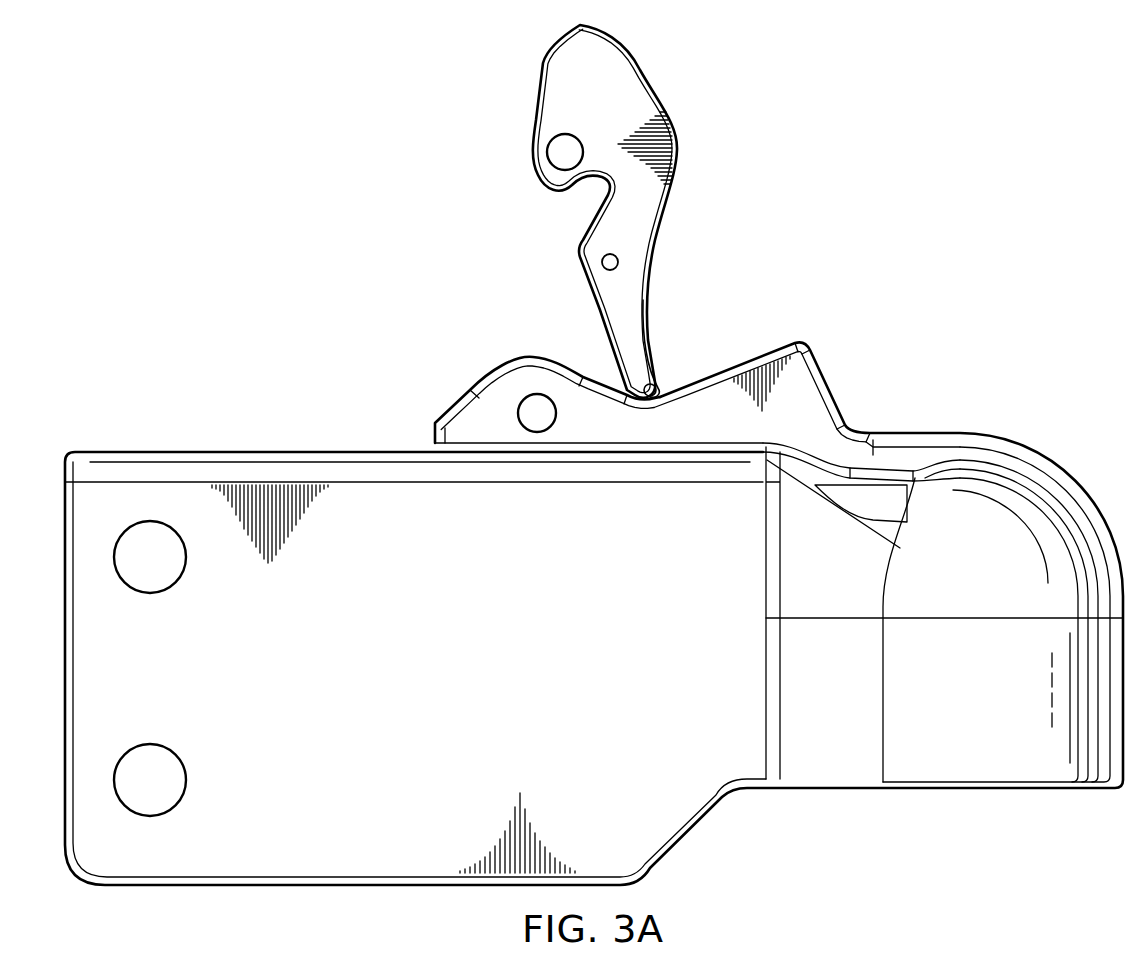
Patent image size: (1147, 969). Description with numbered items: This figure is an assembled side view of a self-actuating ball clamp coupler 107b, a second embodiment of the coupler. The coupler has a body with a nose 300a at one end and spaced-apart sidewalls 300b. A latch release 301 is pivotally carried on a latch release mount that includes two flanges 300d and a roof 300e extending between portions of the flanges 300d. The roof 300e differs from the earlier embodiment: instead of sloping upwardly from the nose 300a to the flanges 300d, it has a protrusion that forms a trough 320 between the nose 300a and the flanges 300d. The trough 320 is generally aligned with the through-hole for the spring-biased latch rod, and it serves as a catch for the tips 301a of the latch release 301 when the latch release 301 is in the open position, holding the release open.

The self-actuating ball clamp coupler 107b is at (277, 112).
The nose 300a is at (1007, 445).
The spaced-apart sidewalls 300b is at (105, 452).
The flanges 300d is at (532, 357).
The roof 300e is at (793, 342).
The latch release 301 is at (680, 150).
The tips 301a is at (647, 378).
The trough 320 is at (670, 396).